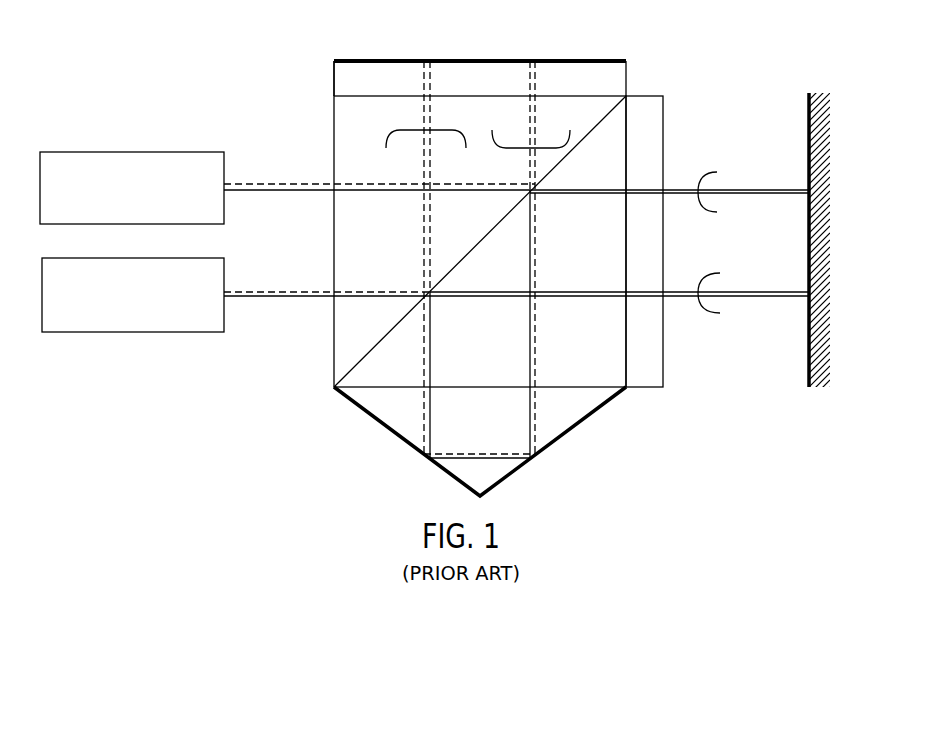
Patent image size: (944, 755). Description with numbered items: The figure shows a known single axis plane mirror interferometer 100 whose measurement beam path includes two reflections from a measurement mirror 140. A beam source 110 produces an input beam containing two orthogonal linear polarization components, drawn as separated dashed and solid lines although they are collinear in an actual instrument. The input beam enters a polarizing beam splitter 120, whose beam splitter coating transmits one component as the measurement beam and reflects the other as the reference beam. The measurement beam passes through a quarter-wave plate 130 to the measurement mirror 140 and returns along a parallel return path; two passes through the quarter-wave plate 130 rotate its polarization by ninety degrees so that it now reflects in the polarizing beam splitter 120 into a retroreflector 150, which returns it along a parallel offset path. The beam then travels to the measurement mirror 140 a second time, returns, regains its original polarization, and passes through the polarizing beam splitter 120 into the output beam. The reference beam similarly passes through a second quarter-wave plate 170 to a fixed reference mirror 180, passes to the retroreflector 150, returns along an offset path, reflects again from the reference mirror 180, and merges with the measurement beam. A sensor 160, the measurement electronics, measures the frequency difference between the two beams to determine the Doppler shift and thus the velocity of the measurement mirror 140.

The single axis plane mirror interferometer 100 is at (187, 40).
The beam source 110 is at (116, 213).
The polarizing beam splitter 120 is at (565, 363).
The quarter-wave plate 130 is at (663, 112).
The measurement mirror 140 is at (808, 112).
The retroreflector 150 is at (578, 424).
The sensor 160 is at (117, 322).
The quarter-wave plate 170 is at (333, 78).
The reference mirror 180 is at (570, 59).